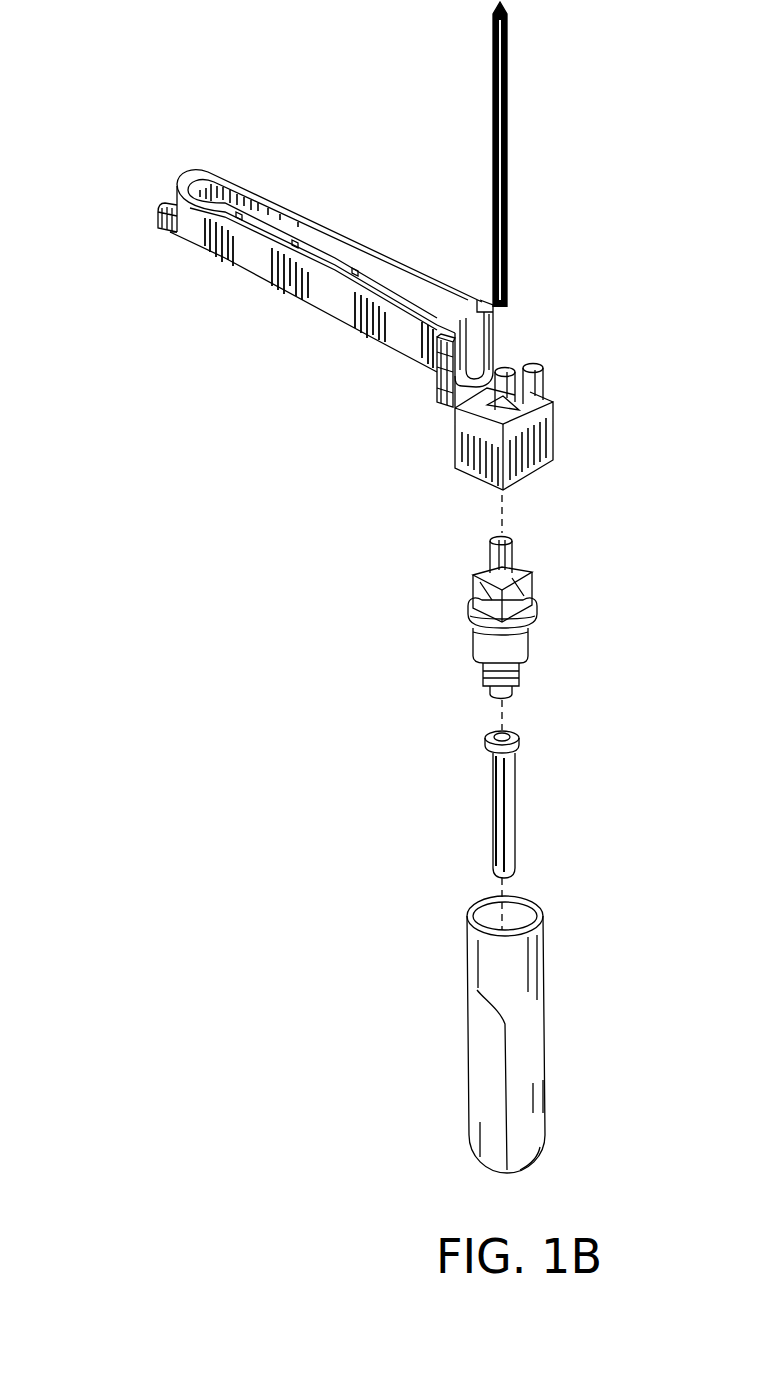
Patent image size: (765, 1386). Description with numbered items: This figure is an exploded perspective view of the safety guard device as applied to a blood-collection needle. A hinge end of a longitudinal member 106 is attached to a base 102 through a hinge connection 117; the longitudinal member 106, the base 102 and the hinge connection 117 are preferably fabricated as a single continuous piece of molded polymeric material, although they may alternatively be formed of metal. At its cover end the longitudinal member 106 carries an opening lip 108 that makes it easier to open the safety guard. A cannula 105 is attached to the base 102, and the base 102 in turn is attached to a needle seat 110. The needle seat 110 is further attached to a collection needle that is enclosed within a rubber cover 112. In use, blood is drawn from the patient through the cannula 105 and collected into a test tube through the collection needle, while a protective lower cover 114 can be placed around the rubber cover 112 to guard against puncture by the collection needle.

The base 102 is at (554, 445).
The cannula 105 is at (507, 231).
The longitudinal member 106 is at (196, 171).
The opening lip 108 is at (160, 228).
The needle seat 110 is at (531, 643).
The rubber cover 112 is at (505, 790).
The protective lower cover 114 is at (547, 1043).
The hinge connection 117 is at (455, 402).